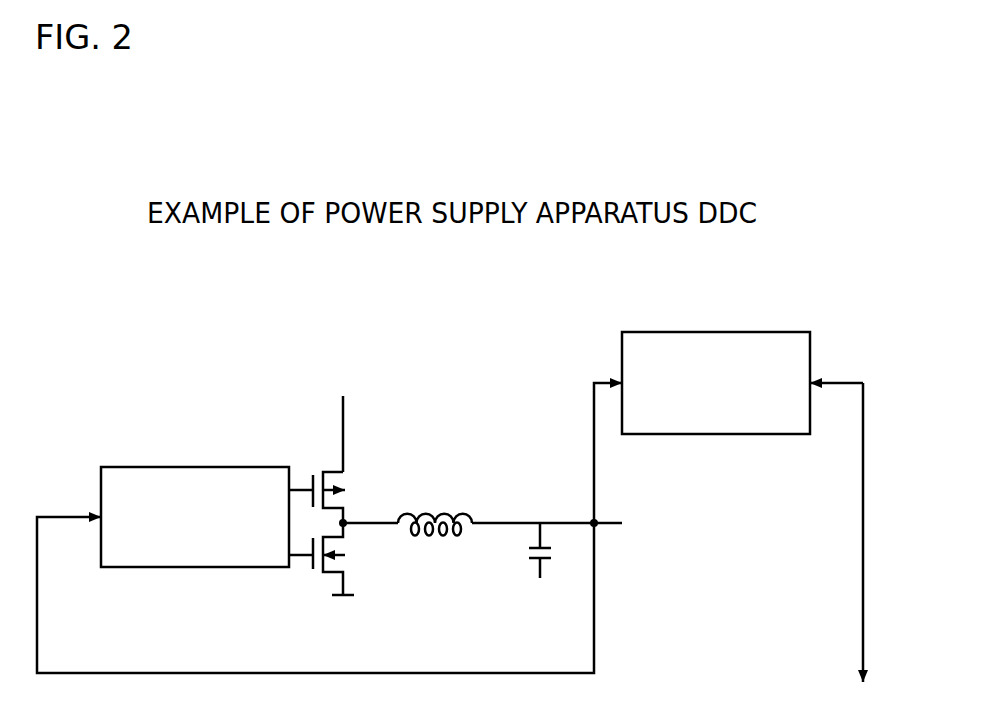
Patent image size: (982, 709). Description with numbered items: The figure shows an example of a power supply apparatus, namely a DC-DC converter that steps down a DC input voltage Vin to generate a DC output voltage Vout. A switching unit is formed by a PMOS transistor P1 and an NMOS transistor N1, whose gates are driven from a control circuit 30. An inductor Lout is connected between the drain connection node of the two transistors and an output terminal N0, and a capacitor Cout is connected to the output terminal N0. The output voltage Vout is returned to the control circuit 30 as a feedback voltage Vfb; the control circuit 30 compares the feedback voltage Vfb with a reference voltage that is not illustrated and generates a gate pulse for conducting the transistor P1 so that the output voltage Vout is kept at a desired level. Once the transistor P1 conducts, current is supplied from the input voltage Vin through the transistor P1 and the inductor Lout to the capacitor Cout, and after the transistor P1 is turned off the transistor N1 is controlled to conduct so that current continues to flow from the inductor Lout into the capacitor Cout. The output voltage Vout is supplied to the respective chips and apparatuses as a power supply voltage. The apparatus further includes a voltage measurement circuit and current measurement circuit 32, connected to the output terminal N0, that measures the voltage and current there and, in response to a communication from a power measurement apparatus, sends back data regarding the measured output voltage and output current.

The control circuit 30 is at (195, 499).
The voltage measurement circuit and current measurement circuit 32 is at (716, 368).
The PMOS transistor P1 is at (335, 497).
The NMOS transistor N1 is at (335, 559).
The inductor Lout is at (435, 501).
The capacitor Cout is at (511, 565).
The output terminal N0 is at (535, 504).
The output voltage Vout is at (634, 527).
The input voltage Vin is at (342, 415).
The feedback voltage Vfb is at (315, 573).